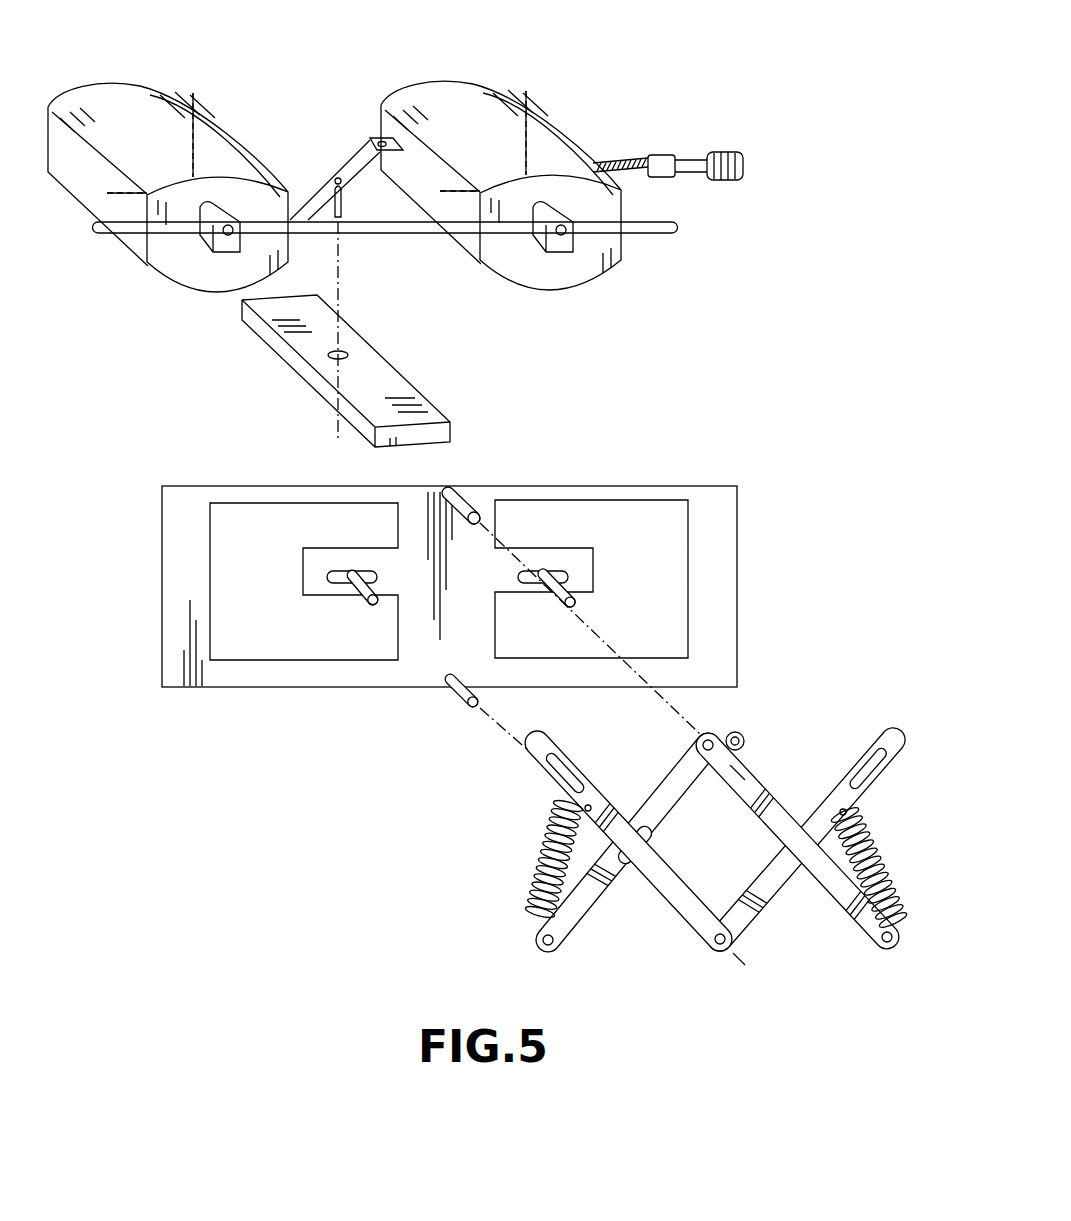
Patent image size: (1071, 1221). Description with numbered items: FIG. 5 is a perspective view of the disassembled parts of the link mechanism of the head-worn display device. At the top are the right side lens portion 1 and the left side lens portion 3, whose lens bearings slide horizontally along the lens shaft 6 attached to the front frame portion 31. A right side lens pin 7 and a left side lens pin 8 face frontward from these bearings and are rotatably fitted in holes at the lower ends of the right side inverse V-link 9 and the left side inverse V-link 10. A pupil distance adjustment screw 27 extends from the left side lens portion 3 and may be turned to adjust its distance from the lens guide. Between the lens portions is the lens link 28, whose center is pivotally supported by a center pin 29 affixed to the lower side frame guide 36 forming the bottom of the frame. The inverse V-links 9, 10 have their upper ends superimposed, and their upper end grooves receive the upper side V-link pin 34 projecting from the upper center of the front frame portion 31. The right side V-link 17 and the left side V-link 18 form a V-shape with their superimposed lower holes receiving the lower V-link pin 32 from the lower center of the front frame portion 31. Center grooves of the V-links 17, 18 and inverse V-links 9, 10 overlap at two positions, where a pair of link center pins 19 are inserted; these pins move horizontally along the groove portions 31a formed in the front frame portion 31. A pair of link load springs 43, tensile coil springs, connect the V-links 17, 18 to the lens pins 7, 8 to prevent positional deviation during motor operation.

The right side lens portion 1 is at (98, 93).
The left side lens portion 3 is at (488, 86).
The lens shaft 6 is at (690, 226).
The right side lens pin 7 is at (213, 253).
The left side lens pin 8 is at (560, 254).
The right side inverse V-link 9 is at (585, 900).
The left side inverse V-link 10 is at (843, 898).
The right side V-link 17 is at (660, 900).
The left side V-link 18 is at (828, 797).
The link center pin 19 is at (358, 597).
The pupil distance adjustment screw 27 is at (683, 164).
The lens link 28 is at (338, 176).
The center pin 29 is at (306, 186).
The front frame portion 31 is at (643, 485).
The groove portion 31a is at (327, 577).
The lower V-link pin 32 is at (458, 697).
The upper side V-link pin 34 is at (463, 497).
The lower side frame guide 36 is at (310, 383).
The link load spring 43 is at (560, 811).